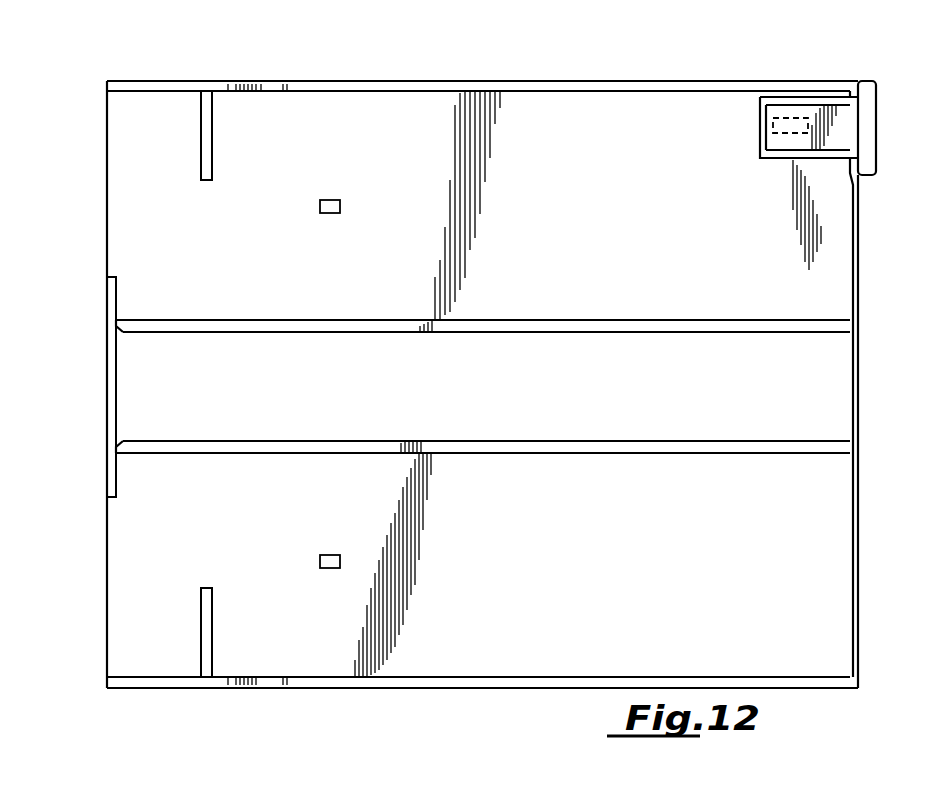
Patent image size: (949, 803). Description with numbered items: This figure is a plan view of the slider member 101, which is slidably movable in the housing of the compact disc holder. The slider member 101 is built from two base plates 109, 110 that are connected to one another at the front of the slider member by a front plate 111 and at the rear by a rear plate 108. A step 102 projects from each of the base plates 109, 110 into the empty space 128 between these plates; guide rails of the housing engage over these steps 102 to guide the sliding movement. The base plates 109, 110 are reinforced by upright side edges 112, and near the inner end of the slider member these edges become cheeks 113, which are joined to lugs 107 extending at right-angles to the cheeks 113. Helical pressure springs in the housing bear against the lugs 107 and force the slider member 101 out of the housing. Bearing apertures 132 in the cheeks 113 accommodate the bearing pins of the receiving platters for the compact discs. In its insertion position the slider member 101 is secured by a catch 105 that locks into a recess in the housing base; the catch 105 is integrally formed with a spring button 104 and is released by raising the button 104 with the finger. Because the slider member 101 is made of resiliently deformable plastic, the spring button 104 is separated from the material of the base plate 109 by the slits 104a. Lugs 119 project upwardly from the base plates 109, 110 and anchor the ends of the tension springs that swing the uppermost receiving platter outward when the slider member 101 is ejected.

The slider member 101 is at (100, 218).
The step 102 is at (578, 325).
The spring button 104 is at (867, 123).
The slits 104a is at (832, 100).
The catch 105 is at (790, 118).
The lugs 107 is at (207, 147).
The rear plate 108 is at (110, 384).
The base plate 109 is at (565, 117).
The base plate 110 is at (513, 655).
The front plate 111 is at (855, 381).
The upright side edges 112 is at (372, 90).
The cheeks 113 is at (227, 86).
The lugs 119 is at (330, 200).
The empty space 128 is at (222, 395).
The bearing apertures 132 is at (247, 91).